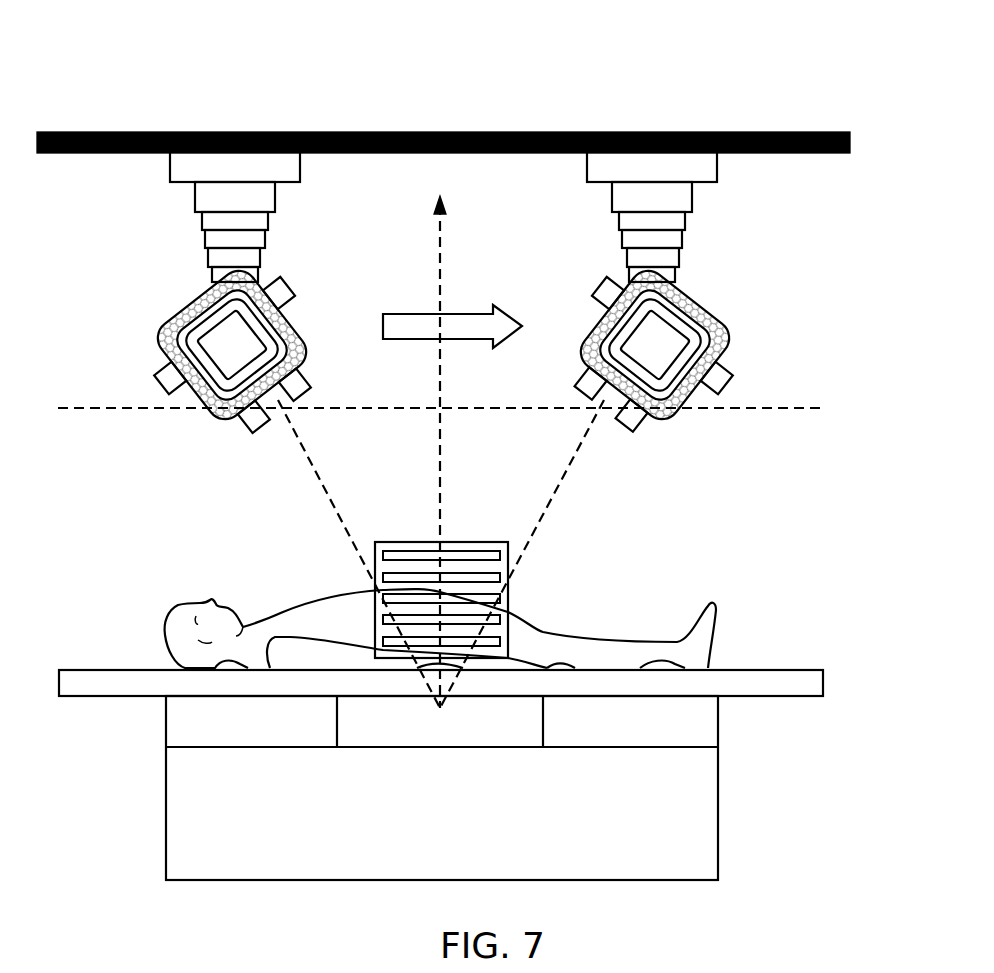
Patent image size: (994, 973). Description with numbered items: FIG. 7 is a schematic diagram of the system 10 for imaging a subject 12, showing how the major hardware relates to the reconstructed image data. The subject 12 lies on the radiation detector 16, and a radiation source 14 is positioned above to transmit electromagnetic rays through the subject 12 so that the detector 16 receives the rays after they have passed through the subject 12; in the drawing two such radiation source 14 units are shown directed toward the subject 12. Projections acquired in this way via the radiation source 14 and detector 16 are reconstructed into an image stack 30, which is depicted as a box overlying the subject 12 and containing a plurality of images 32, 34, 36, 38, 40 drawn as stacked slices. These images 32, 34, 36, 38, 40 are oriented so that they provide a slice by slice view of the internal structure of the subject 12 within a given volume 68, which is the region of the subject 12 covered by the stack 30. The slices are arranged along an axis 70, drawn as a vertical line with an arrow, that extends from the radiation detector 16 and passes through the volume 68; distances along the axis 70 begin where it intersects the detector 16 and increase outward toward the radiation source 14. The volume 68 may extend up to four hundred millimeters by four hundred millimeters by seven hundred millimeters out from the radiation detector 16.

The system 10 is at (138, 106).
The subject 12 is at (192, 606).
The radiation source 14 is at (172, 322).
The radiation detector 16 is at (533, 723).
The image stack 30 is at (607, 536).
The image 32 is at (500, 642).
The image 34 is at (500, 556).
The image 36 is at (500, 620).
The image 38 is at (500, 599).
The image 40 is at (500, 578).
The volume 68 is at (375, 558).
The axis 70 is at (441, 262).